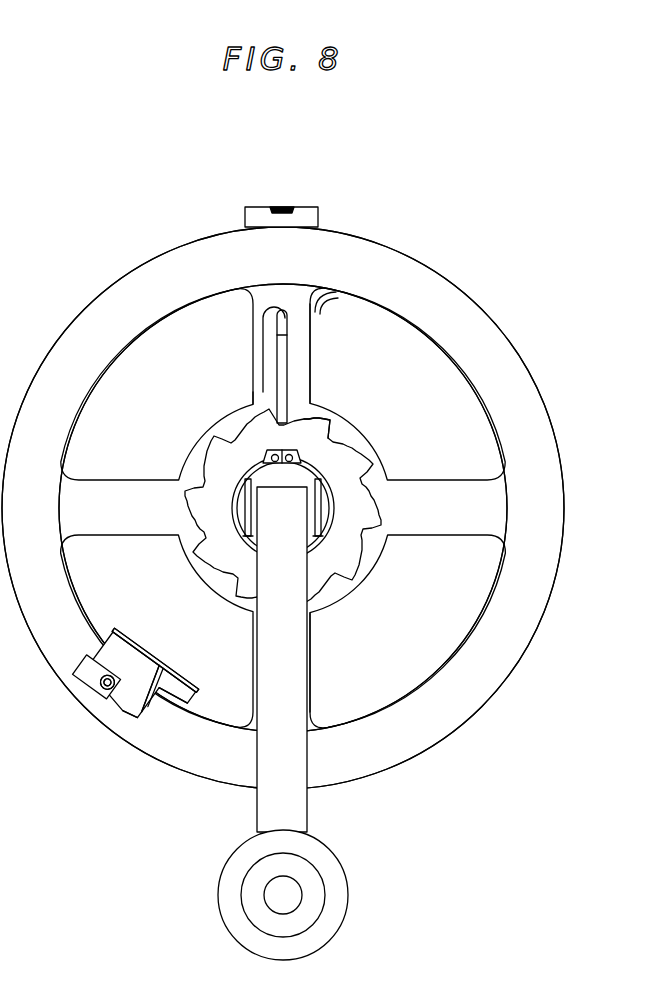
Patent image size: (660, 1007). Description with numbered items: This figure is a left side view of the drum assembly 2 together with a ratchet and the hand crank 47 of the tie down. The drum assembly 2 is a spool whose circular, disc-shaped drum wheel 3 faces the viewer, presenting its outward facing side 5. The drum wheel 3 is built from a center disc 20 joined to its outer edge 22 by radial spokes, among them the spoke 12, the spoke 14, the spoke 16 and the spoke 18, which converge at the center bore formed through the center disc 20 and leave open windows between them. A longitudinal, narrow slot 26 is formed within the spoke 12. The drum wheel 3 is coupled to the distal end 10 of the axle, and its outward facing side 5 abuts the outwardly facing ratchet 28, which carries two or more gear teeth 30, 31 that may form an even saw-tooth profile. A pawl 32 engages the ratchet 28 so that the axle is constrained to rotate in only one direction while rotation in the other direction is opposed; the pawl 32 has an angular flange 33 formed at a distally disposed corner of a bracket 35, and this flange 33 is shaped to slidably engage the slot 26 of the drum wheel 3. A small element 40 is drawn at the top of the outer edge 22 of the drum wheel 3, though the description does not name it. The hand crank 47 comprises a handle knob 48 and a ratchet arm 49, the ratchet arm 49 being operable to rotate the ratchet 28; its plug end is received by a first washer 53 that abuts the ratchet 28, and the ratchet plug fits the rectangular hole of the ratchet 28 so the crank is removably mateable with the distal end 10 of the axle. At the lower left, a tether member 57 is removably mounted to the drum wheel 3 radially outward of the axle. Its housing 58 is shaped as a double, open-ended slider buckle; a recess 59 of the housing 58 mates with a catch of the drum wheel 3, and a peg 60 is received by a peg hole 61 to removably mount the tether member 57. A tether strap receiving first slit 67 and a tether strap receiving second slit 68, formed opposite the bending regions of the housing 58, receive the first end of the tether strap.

The drum assembly 2 is at (458, 214).
The drum wheel 3 is at (440, 740).
The outward facing side 5 is at (152, 270).
The distal end 10 is at (243, 500).
The radial spoke 12 is at (311, 361).
The radial spoke 14 is at (136, 479).
The radial spoke 16 is at (310, 690).
The radial spoke 18 is at (446, 536).
The center disc 20 is at (416, 450).
The outer edge 22 is at (157, 650).
The slot 26 is at (263, 312).
The ratchet 28 is at (266, 508).
The gear tooth 30 is at (331, 420).
The gear tooth 31 is at (252, 385).
The pawl 32 is at (314, 178).
The angular flange 33 is at (277, 373).
The bracket 35 is at (338, 300).
The tab 40 is at (245, 210).
The hand crank 47 is at (162, 828).
The handle knob 48 is at (348, 884).
The ratchet arm 49 is at (282, 659).
The first washer 53 is at (330, 527).
The tether member 57 is at (166, 661).
The housing 58 is at (118, 634).
The recess 59 is at (160, 690).
The peg 60 is at (98, 692).
The peg hole 61 is at (100, 683).
The tether strap receiving first slit 67 is at (134, 716).
The tether strap receiving second slit 68 is at (162, 702).